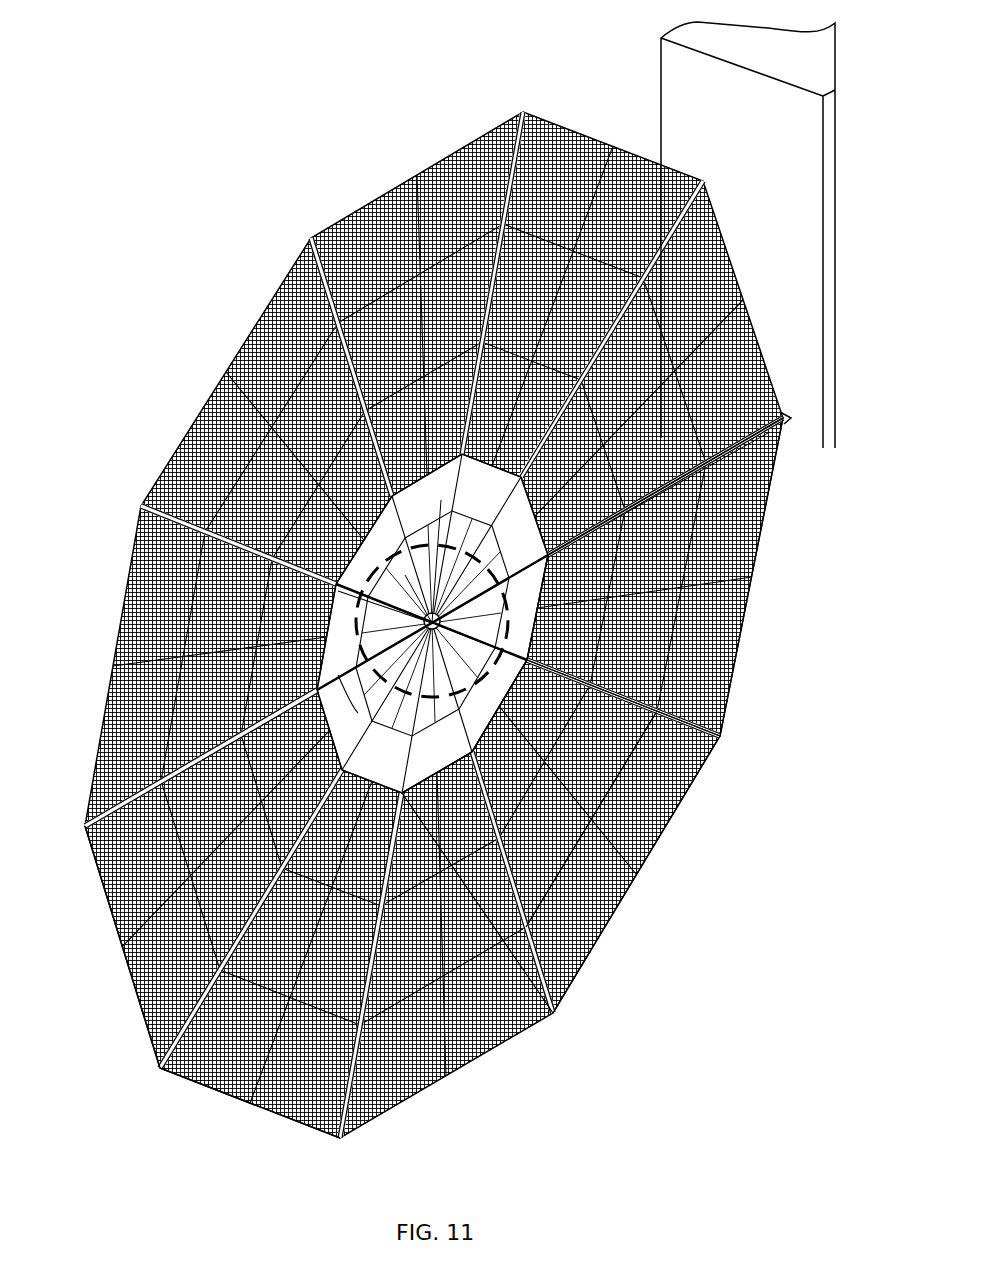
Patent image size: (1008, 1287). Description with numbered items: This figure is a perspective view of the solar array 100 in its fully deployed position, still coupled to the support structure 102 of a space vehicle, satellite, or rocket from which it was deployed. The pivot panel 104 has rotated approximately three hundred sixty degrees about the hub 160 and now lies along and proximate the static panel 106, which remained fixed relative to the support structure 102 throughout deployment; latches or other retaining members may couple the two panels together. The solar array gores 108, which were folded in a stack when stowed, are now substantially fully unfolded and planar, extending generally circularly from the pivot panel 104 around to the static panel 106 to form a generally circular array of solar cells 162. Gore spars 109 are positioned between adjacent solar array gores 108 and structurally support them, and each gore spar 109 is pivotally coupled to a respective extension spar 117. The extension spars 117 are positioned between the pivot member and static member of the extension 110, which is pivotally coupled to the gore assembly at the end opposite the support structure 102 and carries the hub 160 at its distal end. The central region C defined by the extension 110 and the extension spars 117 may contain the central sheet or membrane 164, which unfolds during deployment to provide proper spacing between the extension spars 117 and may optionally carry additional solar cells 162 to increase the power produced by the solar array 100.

The solar array 100 is at (176, 118).
The support structure 102 is at (805, 252).
The pivot panel 104 is at (750, 418).
The static panel 106 is at (735, 450).
The extension 110 is at (535, 580).
The central region C is at (510, 668).
The solar cells 162 is at (610, 847).
The solar array gores 108 is at (582, 915).
The gore spars 109 is at (102, 812).
The extension spars 117 is at (330, 667).
The hub 160 is at (397, 567).
The central sheet or membrane 164 is at (433, 492).